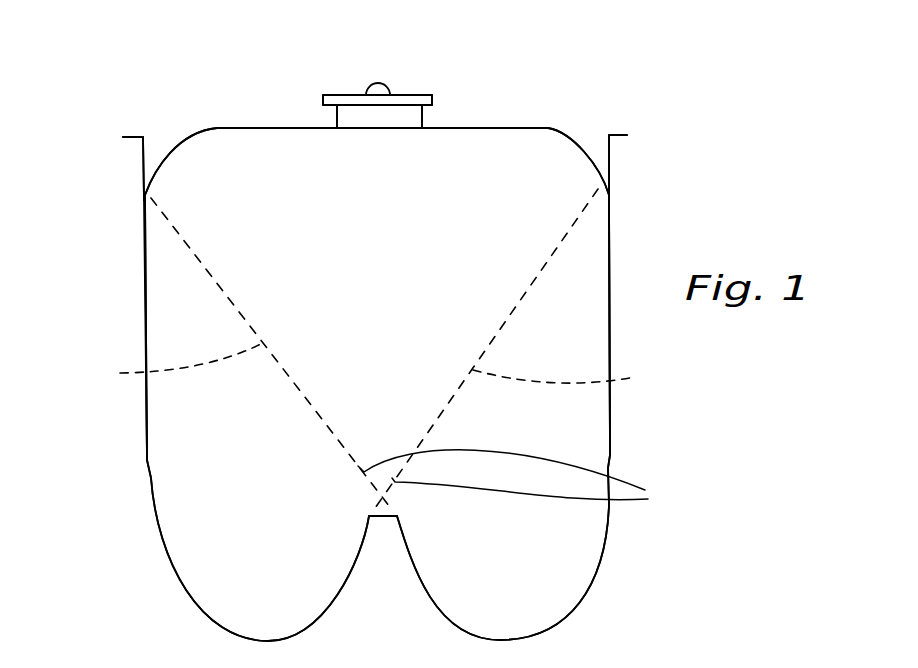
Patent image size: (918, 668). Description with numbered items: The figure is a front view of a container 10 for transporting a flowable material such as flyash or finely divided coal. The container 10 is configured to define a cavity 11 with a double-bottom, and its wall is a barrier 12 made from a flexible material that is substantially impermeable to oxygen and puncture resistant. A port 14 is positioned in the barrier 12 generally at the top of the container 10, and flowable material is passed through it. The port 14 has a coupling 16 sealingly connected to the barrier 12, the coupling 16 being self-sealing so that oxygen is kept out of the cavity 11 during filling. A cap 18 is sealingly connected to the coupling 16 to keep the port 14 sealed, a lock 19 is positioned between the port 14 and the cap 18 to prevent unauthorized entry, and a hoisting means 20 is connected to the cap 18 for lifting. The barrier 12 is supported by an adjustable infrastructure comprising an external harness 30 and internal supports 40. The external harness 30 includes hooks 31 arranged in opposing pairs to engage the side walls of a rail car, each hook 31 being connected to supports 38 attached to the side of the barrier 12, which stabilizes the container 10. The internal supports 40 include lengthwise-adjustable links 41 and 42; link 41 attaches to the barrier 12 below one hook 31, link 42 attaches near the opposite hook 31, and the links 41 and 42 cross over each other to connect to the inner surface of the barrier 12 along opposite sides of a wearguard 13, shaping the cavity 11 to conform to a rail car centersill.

The container 10 is at (661, 23).
The cavity 11 is at (379, 267).
The barrier 12 is at (548, 128).
The wearguard 13 is at (374, 517).
The port 14 is at (422, 116).
The coupling 16 is at (337, 117).
The cap 18 is at (326, 98).
The lock 19 is at (422, 112).
The hoisting means 20 is at (377, 83).
The external harness 30 is at (630, 157).
The hook 31 is at (124, 137).
The support 38 is at (143, 213).
The internal supports 40 is at (528, 484).
The link 41 is at (237, 354).
The link 42 is at (528, 350).